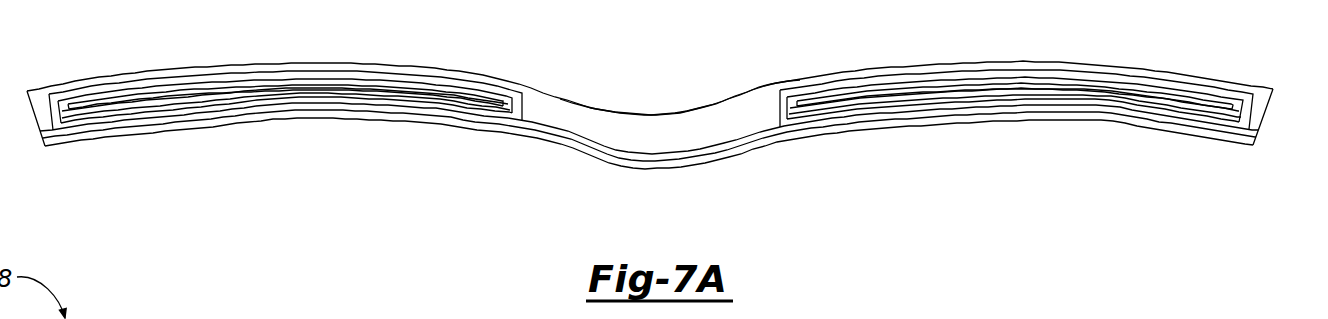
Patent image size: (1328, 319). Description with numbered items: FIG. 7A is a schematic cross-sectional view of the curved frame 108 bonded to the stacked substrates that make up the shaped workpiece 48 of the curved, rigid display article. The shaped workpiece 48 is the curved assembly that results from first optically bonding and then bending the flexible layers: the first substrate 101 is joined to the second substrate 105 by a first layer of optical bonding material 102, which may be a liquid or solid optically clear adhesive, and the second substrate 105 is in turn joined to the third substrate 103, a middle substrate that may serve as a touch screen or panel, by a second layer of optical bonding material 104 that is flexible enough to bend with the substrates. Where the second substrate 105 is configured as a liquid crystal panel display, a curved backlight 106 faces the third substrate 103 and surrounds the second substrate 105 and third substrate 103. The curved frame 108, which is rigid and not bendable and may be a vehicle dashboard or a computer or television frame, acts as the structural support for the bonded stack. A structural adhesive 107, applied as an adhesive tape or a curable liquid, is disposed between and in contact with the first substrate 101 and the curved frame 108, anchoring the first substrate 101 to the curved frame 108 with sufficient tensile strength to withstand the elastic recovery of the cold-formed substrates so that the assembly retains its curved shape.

The shaped workpiece 48 is at (1243, 68).
The first substrate 101 is at (632, 163).
The optical bonding material 102 is at (122, 118).
The third substrate 103 is at (162, 107).
The second layer of optical bonding material 104 is at (212, 98).
The second substrate 105 is at (263, 88).
The curved backlight 106 is at (313, 80).
The structural adhesive 107 is at (680, 157).
The curved frame 108 is at (724, 131).